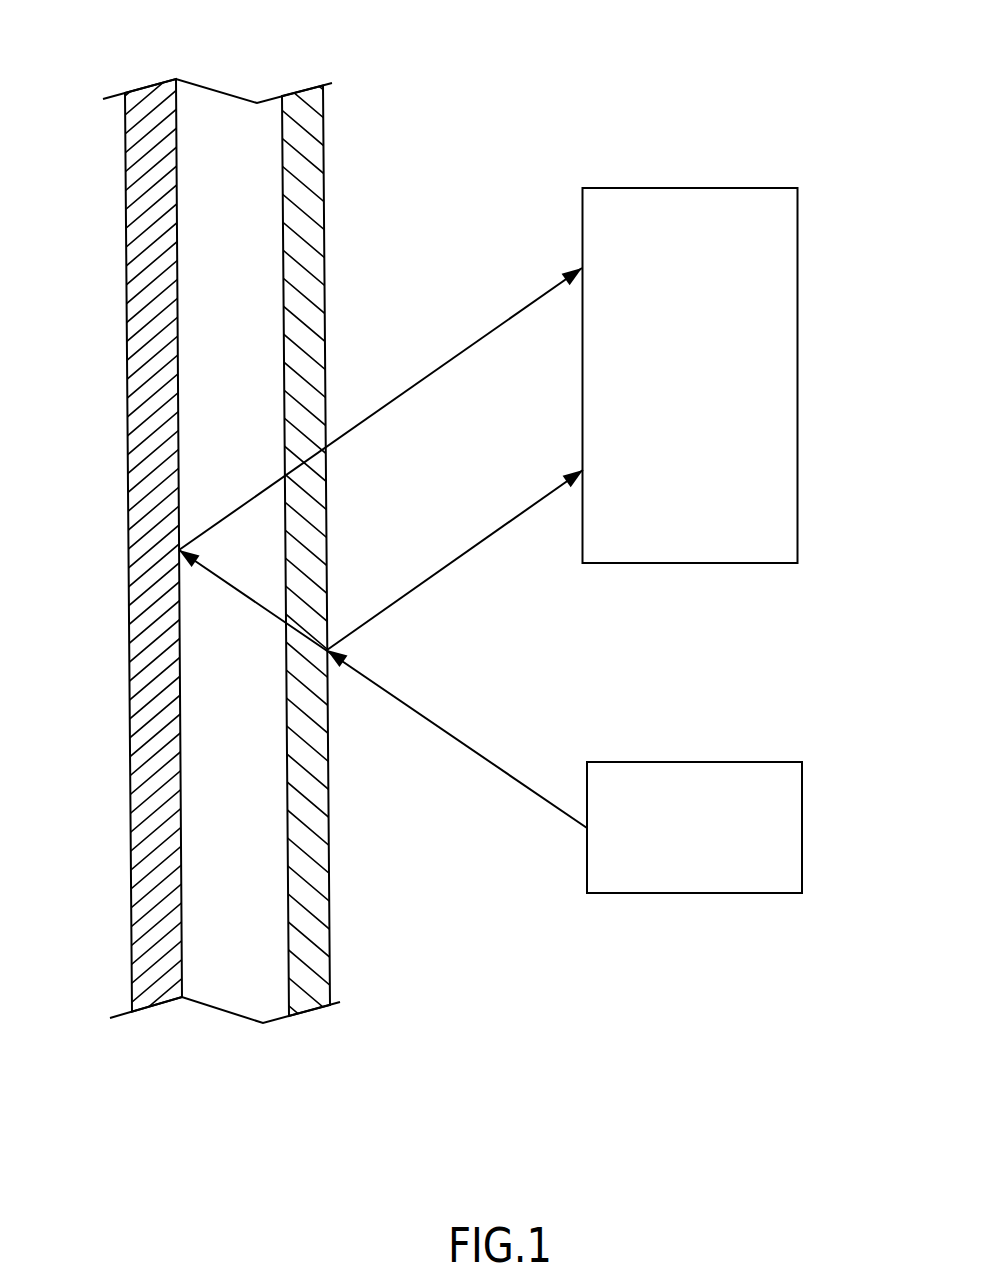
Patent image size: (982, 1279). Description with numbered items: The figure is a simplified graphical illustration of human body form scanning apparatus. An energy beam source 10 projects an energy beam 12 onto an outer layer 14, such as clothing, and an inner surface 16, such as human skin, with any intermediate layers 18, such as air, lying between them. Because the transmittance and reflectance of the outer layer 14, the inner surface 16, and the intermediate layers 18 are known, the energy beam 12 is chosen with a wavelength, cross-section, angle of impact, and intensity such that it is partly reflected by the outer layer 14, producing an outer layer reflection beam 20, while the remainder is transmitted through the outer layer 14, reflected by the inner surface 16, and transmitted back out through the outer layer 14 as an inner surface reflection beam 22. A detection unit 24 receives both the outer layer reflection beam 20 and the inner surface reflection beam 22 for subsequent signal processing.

The energy beam source 10 is at (802, 826).
The energy beam 12 is at (495, 762).
The outer layer 14 is at (300, 117).
The inner surface 16 is at (153, 117).
The intermediate layers 18 is at (232, 137).
The outer layer reflection beam 20 is at (428, 578).
The inner surface reflection beam 22 is at (427, 375).
The detection unit 24 is at (798, 378).